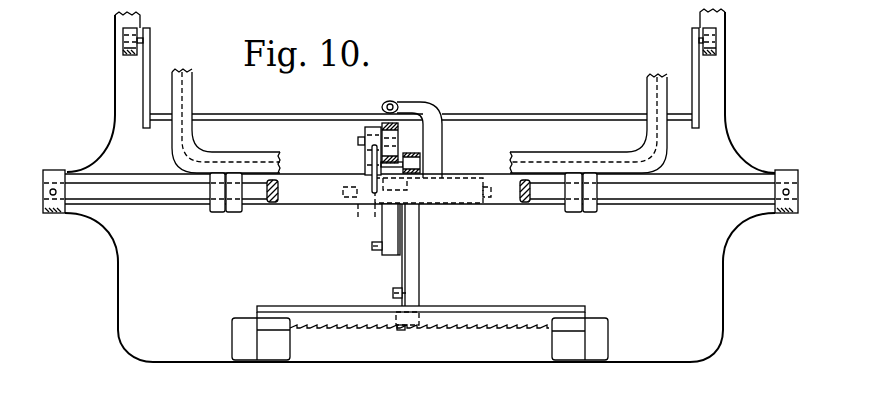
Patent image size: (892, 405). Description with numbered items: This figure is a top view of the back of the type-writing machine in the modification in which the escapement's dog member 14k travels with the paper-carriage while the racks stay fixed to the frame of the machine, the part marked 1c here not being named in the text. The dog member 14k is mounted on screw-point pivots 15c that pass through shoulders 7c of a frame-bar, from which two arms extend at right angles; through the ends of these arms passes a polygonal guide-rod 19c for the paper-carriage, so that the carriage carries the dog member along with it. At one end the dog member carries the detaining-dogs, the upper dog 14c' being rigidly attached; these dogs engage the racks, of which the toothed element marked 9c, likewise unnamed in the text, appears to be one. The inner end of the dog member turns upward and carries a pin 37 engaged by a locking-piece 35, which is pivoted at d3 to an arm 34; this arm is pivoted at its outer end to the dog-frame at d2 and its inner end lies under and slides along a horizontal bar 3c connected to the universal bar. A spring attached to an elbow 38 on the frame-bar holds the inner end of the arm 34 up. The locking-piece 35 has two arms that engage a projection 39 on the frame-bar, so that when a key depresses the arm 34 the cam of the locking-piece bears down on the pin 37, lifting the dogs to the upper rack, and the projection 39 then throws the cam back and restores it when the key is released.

The frame 1c is at (717, 302).
The horizontal bar 3c is at (583, 119).
The shoulders 7c is at (367, 206).
The base plate 9c is at (548, 310).
The upper dog 14c' is at (380, 291).
The dog member 14k is at (411, 257).
The pivots 15c is at (357, 193).
The polygonal guide-rod 19c is at (127, 183).
The arm 34 is at (382, 233).
The locking-piece 35 is at (364, 153).
The pin 37 is at (399, 163).
The elbow 38 is at (430, 104).
The projection 39 is at (364, 160).
The pivot d2 is at (372, 248).
The pivot d3 is at (360, 138).